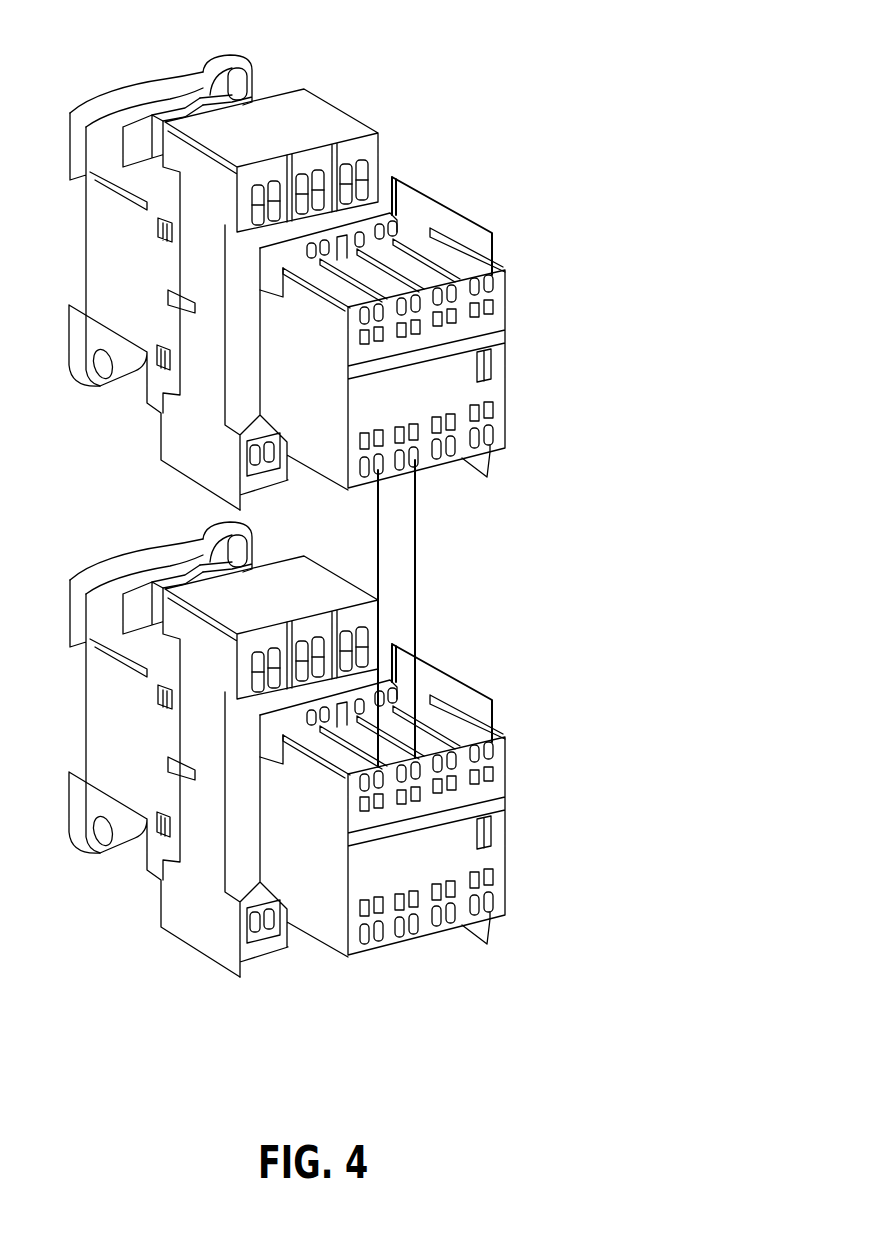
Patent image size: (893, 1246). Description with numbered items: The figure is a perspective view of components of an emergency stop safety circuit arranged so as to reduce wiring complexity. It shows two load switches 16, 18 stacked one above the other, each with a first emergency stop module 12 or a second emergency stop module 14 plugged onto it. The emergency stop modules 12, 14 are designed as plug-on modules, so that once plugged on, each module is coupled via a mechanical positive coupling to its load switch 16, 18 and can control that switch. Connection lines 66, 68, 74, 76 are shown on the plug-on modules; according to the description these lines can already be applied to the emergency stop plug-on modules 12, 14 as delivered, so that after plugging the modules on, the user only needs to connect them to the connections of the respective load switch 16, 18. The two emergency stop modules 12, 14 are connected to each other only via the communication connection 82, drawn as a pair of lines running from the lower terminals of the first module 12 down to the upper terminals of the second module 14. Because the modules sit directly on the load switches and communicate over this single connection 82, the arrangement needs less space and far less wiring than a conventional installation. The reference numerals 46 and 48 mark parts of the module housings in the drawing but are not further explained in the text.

The first emergency stop module 12 is at (488, 390).
The second emergency stop module 14 is at (488, 859).
The load switch 16 is at (320, 117).
The load switch 18 is at (193, 937).
The terminal block housing 46 is at (242, 393).
The terminal block housing 48 is at (242, 860).
The connection line 66 is at (440, 198).
The connection line 68 is at (440, 665).
The connection line 74 is at (492, 466).
The connection line 76 is at (492, 935).
The communication connection 82 is at (418, 538).